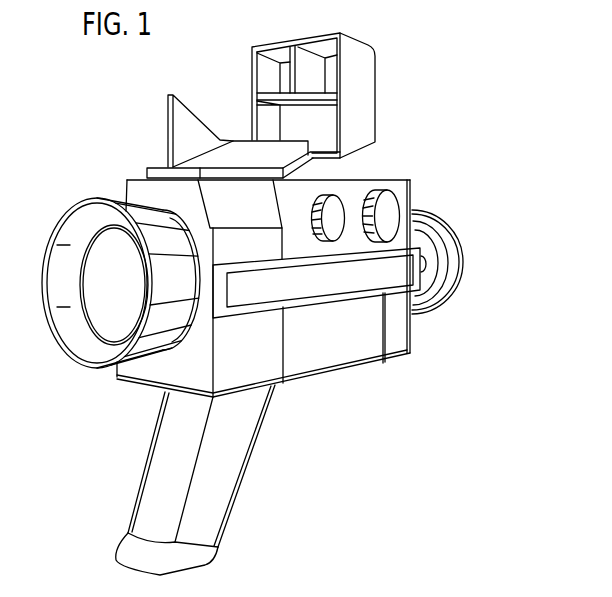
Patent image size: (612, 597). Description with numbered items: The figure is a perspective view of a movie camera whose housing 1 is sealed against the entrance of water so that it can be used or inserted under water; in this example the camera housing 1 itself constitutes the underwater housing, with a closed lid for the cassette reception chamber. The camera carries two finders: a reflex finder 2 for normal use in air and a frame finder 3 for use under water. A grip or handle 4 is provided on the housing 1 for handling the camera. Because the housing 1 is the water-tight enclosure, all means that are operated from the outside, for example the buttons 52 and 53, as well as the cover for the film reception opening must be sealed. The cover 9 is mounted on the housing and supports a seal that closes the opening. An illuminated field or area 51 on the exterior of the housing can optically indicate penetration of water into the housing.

The housing 1 is at (312, 383).
The reflex finder 2 is at (440, 233).
The frame finder 3 is at (228, 105).
The grip or handle 4 is at (162, 473).
The cover 9 is at (363, 348).
The illuminated field or area 51 is at (300, 288).
The button 52 is at (338, 203).
The button 53 is at (388, 203).